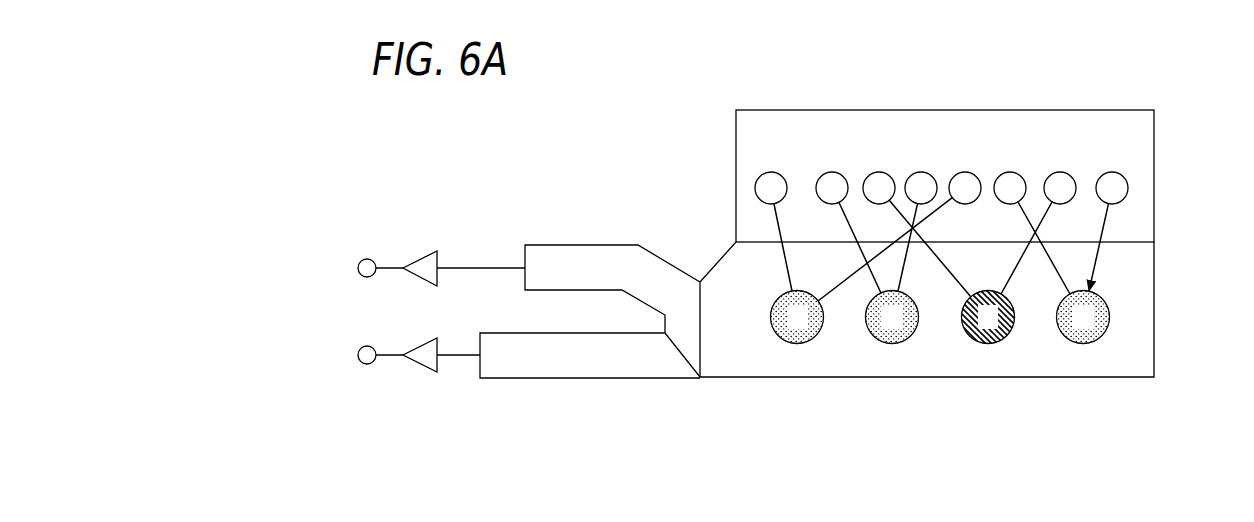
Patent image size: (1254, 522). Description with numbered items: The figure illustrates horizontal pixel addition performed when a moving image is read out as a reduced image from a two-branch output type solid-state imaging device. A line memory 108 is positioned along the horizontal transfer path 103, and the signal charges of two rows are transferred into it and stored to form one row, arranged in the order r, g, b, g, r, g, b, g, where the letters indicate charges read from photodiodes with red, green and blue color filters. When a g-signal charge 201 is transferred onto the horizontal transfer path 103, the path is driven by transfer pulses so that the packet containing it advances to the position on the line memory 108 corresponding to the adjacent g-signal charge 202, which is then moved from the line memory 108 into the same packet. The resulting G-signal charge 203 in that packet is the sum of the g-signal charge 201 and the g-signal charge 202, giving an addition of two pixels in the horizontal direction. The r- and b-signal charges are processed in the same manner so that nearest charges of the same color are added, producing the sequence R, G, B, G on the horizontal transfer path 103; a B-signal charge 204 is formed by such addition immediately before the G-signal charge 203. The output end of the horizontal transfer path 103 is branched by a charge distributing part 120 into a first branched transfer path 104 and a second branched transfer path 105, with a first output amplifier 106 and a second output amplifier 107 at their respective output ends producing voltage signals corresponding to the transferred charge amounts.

The horizontal transfer path 103 is at (1154, 307).
The first branched transfer path 104 is at (598, 243).
The second branched transfer path 105 is at (598, 380).
The first output amplifier 106 is at (420, 255).
The second output amplifier 107 is at (420, 372).
The line memory 108 is at (1154, 177).
The charge distributing part 120 is at (688, 307).
The g-signal charge 201 is at (1108, 171).
The g-signal charge 202 is at (1006, 171).
The G-signal charge 203 is at (1082, 344).
The B-signal charge 204 is at (985, 344).